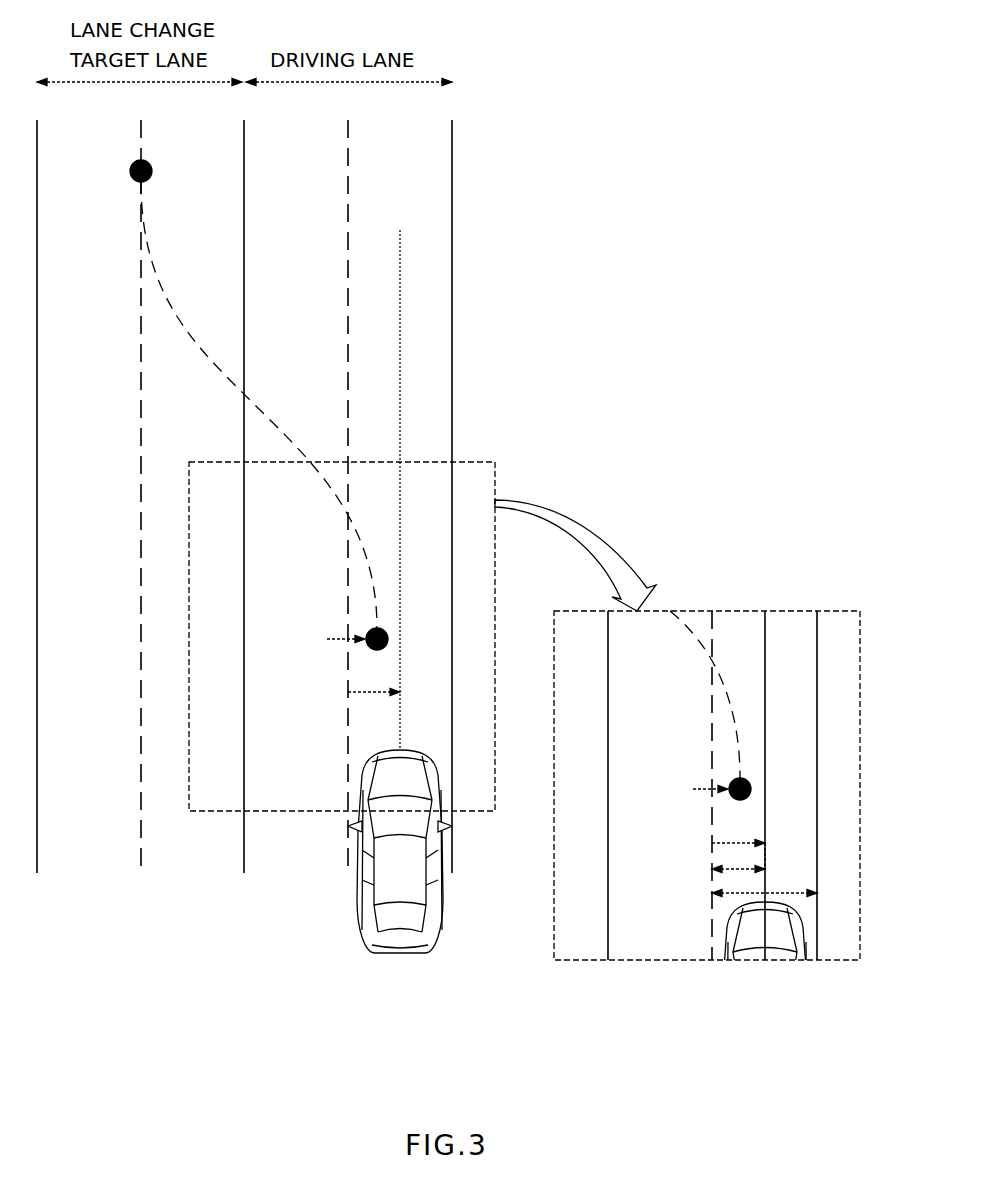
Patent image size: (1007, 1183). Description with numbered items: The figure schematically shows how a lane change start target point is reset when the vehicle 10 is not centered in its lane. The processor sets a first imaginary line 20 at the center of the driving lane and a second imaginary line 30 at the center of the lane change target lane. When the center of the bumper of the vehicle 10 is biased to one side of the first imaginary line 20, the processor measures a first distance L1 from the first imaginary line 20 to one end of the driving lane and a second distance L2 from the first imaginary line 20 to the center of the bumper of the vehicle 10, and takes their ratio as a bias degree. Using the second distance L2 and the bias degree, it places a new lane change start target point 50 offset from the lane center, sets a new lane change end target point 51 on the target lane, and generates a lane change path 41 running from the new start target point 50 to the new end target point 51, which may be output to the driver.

The vehicle 10 is at (400, 955).
The first imaginary line 20 is at (348, 283).
The second imaginary line 30 is at (139, 530).
The lane change path 41 is at (182, 325).
The new lane change start target point 50 is at (389, 631).
The new lane change end target point 51 is at (150, 161).
The first distance L1 is at (745, 893).
The second distance L2 is at (740, 869).